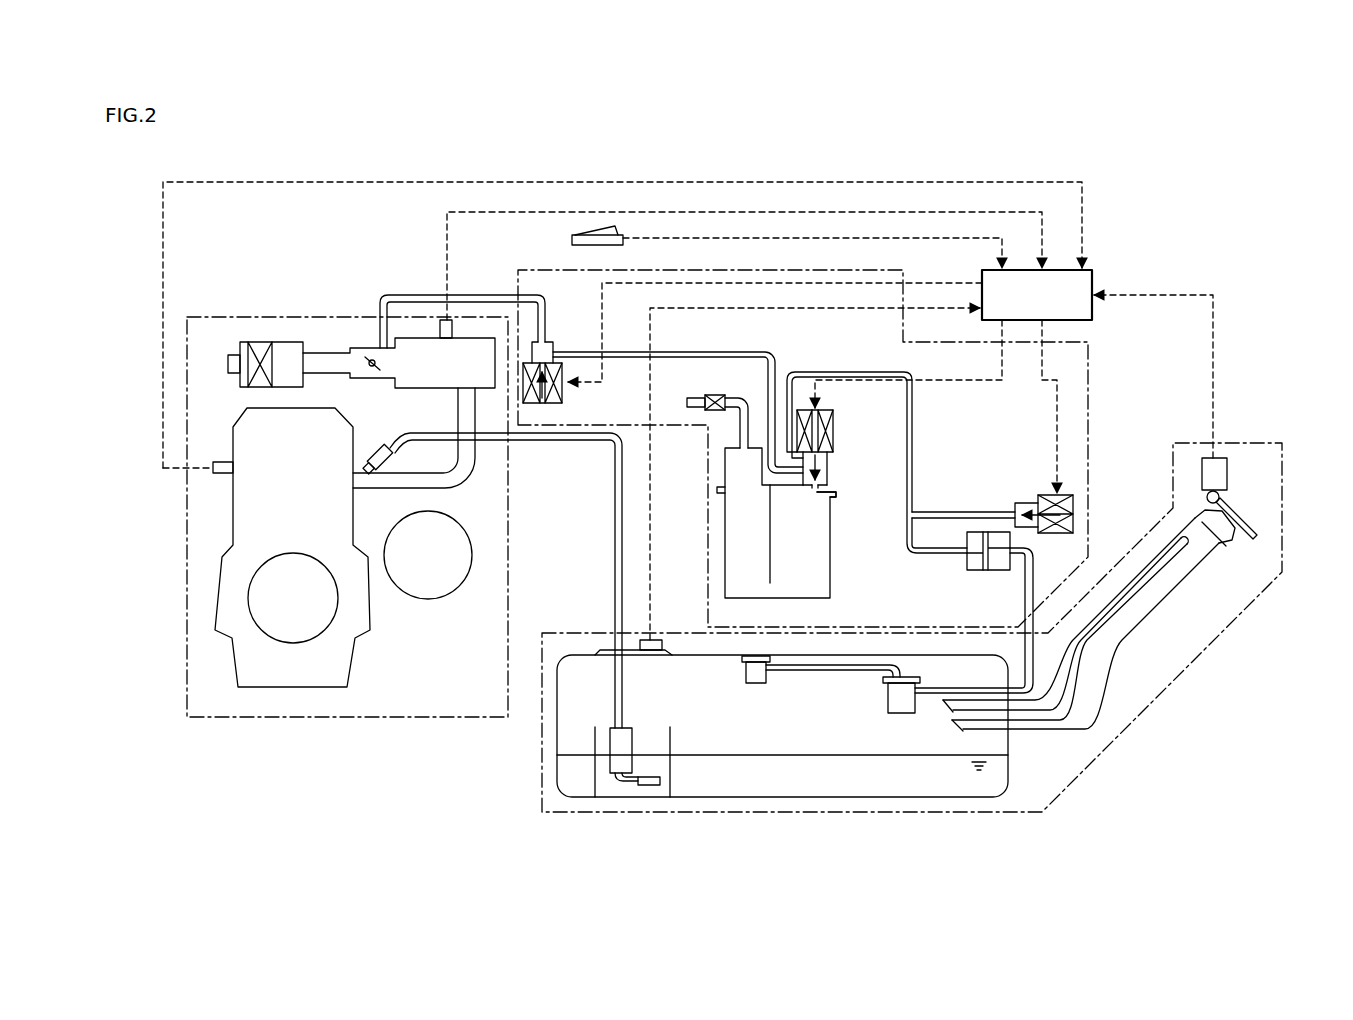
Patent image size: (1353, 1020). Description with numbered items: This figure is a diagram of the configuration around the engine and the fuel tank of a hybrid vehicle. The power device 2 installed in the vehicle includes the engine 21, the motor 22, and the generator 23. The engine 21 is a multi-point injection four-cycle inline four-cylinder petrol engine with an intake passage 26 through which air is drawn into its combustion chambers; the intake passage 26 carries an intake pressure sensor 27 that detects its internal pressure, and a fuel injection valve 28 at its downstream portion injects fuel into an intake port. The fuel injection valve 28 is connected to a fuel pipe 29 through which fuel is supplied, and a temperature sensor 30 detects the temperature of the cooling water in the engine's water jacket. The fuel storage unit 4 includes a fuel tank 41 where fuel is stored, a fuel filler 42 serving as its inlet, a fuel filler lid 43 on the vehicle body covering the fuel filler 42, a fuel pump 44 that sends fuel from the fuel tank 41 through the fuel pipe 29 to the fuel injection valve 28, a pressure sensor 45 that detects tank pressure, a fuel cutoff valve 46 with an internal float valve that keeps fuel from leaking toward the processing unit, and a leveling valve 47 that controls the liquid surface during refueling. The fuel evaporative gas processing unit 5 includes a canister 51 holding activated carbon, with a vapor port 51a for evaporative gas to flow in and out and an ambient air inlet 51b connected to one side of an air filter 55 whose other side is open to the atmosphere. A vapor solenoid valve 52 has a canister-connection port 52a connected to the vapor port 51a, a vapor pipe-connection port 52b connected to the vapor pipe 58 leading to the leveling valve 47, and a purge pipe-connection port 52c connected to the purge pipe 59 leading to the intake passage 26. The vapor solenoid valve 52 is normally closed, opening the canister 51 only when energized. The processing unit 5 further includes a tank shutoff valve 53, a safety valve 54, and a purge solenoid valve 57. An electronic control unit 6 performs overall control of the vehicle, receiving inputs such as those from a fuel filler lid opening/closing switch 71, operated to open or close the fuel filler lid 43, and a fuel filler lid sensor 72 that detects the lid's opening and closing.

The power device 2 is at (257, 316).
The fuel storage unit 4 is at (1183, 682).
The fuel evaporative gas processing unit 5 is at (1092, 375).
The electronic control unit 6 is at (1095, 270).
The engine 21 is at (233, 500).
The motor 22 is at (448, 540).
The generator 23 is at (293, 578).
The intake passage 26 is at (318, 352).
The intake pressure sensor 27 is at (441, 325).
The fuel injection valve 28 is at (380, 447).
The fuel pipe 29 is at (555, 445).
The temperature sensor 30 is at (220, 462).
The fuel tank 41 is at (790, 798).
The fuel filler 42 is at (1234, 548).
The fuel filler lid 43 is at (1256, 522).
The fuel pump 44 is at (672, 742).
The pressure sensor 45 is at (655, 640).
The fuel cutoff valve 46 is at (745, 672).
The leveling valve 47 is at (888, 700).
The canister 51 is at (832, 582).
The vapor port 51a is at (829, 495).
The ambient air inlet 51b is at (728, 462).
The vapor solenoid valve 52 is at (834, 412).
The canister-connection port 52a is at (827, 482).
The vapor pipe-connection port 52b is at (827, 462).
The purge pipe-connection port 52c is at (812, 488).
The tank shutoff valve 53 is at (1075, 500).
The safety valve 54 is at (967, 555).
The air filter 55 is at (712, 392).
The purge solenoid valve 57 is at (565, 393).
The vapor pipe 58 is at (835, 370).
The purge pipe 59 is at (630, 350).
The fuel filler lid opening/closing switch 71 is at (600, 230).
The fuel filler lid sensor 72 is at (1216, 456).